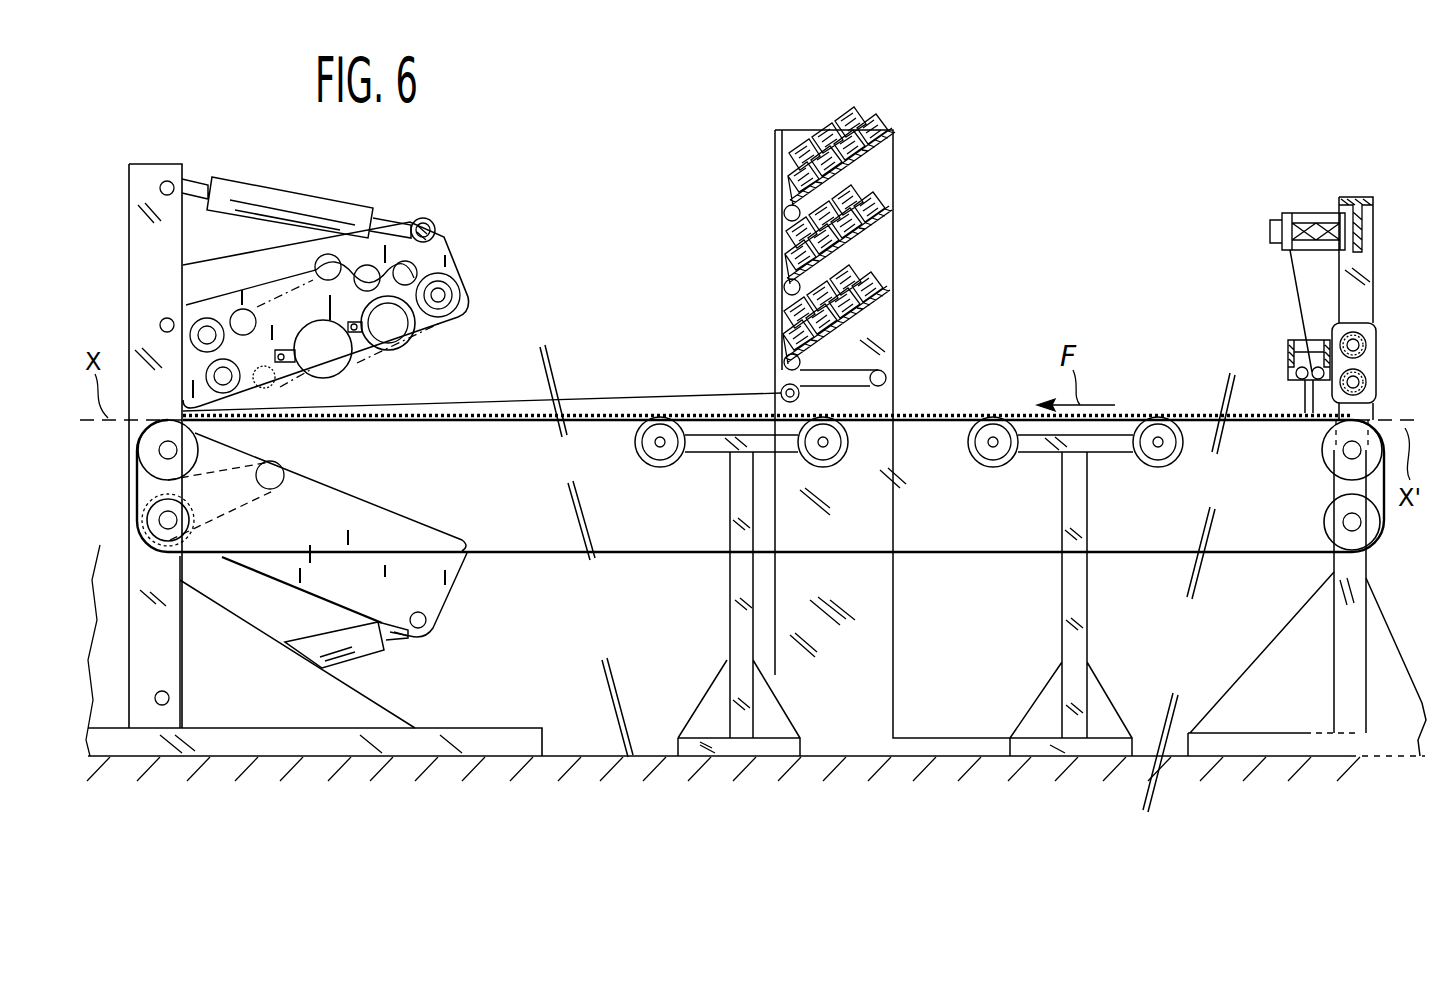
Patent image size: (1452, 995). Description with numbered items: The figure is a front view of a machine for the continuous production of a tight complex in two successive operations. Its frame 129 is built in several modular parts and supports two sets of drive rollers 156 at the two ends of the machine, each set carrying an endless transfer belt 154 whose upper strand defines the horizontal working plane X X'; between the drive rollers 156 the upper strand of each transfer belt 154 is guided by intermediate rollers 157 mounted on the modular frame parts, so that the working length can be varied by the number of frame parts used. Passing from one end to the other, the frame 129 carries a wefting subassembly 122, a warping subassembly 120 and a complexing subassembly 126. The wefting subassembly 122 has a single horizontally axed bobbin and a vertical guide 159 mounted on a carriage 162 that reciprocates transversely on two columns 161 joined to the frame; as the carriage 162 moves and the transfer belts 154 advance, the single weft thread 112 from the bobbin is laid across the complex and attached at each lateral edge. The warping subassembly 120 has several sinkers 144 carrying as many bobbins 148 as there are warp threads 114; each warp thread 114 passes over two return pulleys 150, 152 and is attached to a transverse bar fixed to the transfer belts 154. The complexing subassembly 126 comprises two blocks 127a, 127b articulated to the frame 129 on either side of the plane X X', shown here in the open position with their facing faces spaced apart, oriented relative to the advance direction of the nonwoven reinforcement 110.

The nonwoven reinforcement 110 is at (423, 421).
The weft thread 112 is at (1290, 277).
The warp threads 114 is at (782, 362).
The warping subassembly 120 is at (742, 201).
The wefting subassembly 122 is at (1278, 191).
The complexing subassembly 126 is at (425, 197).
The block 127a is at (445, 256).
The block 127b is at (373, 511).
The frame 129 is at (397, 728).
The sinkers 144 is at (885, 312).
The bobbins 148 is at (838, 135).
The return pulley 150 is at (783, 362).
The return pulley 152 is at (887, 378).
The transfer belt 154 is at (933, 553).
The drive rollers 156 is at (150, 518).
The intermediate rollers 157 is at (817, 455).
The vertical guide 159 is at (1300, 397).
The columns 161 is at (1368, 375).
The carriage 162 is at (1373, 325).